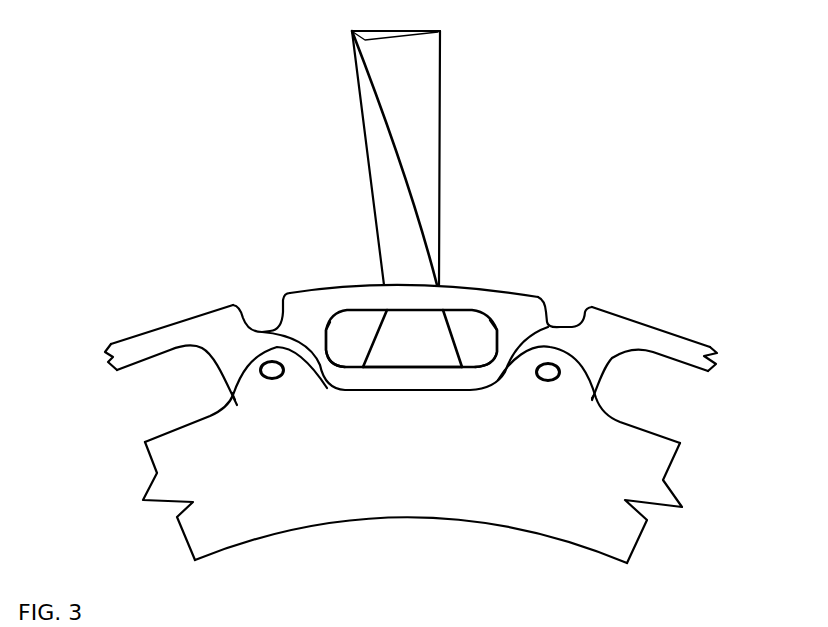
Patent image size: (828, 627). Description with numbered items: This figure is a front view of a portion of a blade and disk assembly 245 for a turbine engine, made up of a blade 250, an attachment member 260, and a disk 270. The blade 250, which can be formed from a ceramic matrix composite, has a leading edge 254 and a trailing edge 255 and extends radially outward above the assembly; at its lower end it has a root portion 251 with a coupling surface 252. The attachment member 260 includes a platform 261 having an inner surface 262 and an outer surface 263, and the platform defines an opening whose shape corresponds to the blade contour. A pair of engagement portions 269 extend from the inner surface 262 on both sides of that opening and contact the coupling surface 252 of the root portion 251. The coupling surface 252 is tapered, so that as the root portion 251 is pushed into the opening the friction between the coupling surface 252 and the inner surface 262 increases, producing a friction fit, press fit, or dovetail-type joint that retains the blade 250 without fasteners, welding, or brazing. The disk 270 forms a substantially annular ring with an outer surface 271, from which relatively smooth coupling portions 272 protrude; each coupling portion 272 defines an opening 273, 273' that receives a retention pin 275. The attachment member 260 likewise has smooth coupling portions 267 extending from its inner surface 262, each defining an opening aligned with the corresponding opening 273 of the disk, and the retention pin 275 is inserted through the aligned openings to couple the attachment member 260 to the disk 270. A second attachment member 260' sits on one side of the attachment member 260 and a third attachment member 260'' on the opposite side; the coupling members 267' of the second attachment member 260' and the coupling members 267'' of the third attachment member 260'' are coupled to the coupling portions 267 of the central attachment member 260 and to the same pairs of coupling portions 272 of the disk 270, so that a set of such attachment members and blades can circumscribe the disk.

The blade and disk assembly 245 is at (207, 81).
The blade 250 is at (447, 60).
The leading edge 254 is at (366, 134).
The trailing edge 255 is at (440, 134).
The root portion 251 is at (392, 362).
The coupling surface 252 is at (448, 308).
The attachment member 260 is at (420, 306).
The second attachment member 260' is at (157, 347).
The third attachment member 260'' is at (670, 345).
The platform 261 is at (372, 297).
The inner surface 262 is at (462, 310).
The outer surface 263 is at (496, 289).
The coupling portions 267 is at (417, 299).
The coupling members of second attachment member 267' is at (177, 347).
The coupling members of third attachment member 267'' is at (648, 345).
The engagement portions 269 is at (342, 333).
The disk 270 is at (136, 468).
The outer surface 271 is at (465, 390).
The coupling portions 272 is at (257, 393).
The opening 273 is at (612, 382).
The opening 273' is at (219, 385).
The retention pin 275 is at (270, 361).